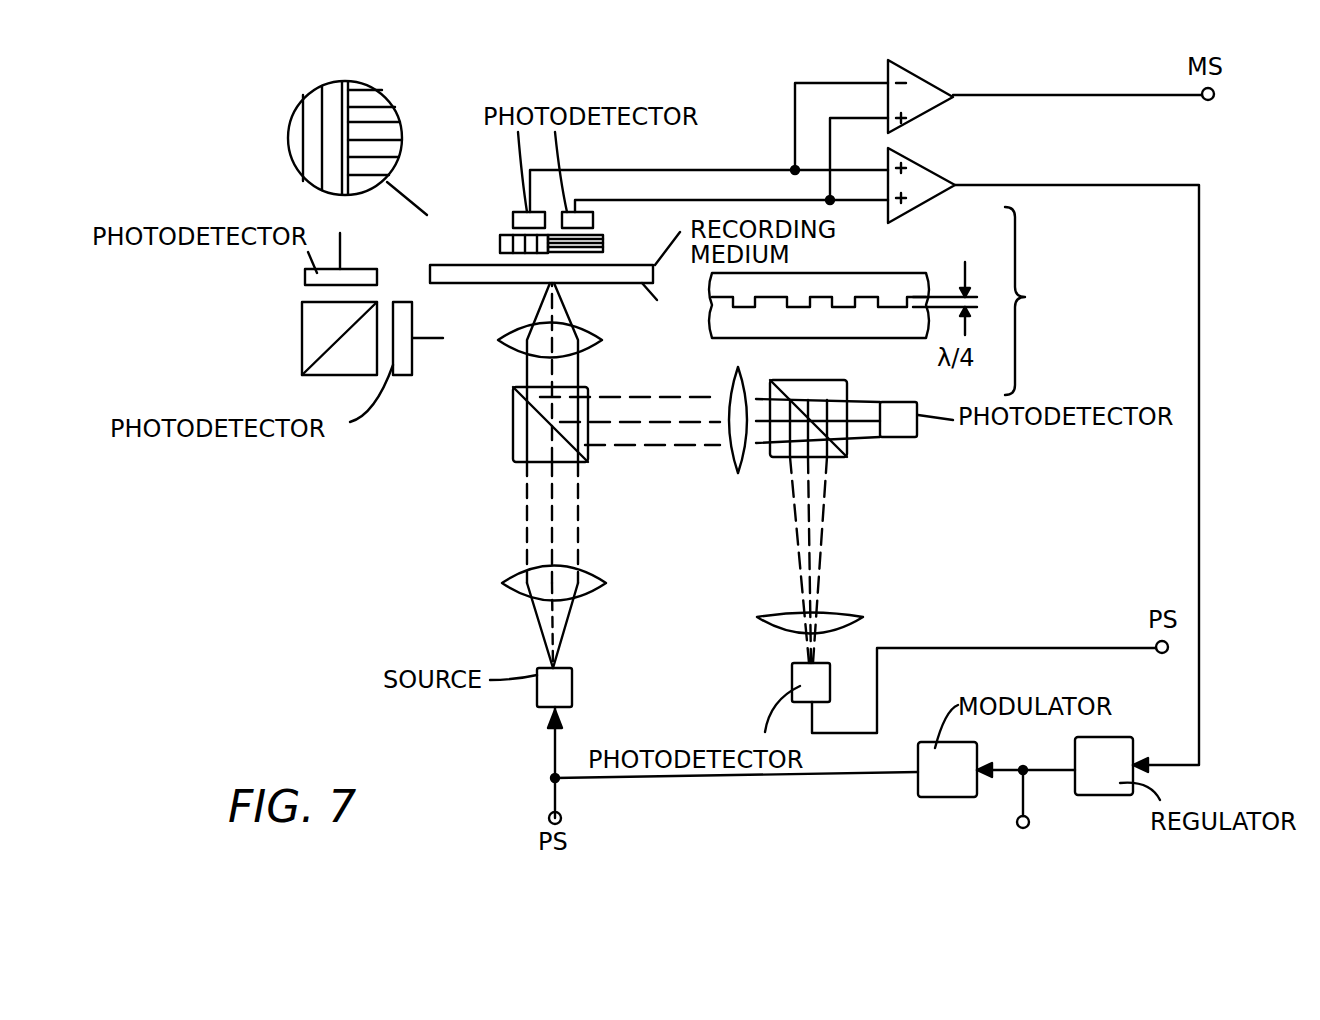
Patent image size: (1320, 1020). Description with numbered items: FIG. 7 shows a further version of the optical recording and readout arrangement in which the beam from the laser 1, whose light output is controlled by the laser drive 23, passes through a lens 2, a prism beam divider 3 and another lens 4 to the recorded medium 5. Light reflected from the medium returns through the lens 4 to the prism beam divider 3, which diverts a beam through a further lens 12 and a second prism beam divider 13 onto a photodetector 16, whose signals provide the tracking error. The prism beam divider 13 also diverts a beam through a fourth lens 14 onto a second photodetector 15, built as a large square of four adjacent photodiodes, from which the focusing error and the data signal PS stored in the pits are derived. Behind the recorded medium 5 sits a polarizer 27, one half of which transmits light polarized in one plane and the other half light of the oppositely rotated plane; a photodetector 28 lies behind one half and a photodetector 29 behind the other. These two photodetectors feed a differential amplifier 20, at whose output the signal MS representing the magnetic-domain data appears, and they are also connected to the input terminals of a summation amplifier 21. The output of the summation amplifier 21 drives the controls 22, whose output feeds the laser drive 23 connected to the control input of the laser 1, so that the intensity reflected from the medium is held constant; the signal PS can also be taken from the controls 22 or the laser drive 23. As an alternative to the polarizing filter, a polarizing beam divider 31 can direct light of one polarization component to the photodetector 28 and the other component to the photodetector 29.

The laser 1 is at (533, 705).
The lens 2 is at (503, 583).
The prism beam divider 3 is at (513, 428).
The lens 4 is at (505, 343).
The recorded medium 5 is at (712, 325).
The lens 12 is at (733, 465).
The prism beam divider 13 is at (840, 452).
The lens 14 is at (840, 612).
The photodetector 15 is at (792, 680).
The photodetector 16 is at (915, 437).
The differential amplifier 20 is at (920, 80).
The summation amplifier 21 is at (930, 170).
The controls 22 is at (1110, 795).
The laser drive 23 is at (925, 797).
The polarizer 27 is at (500, 243).
The photodetector 28 is at (513, 218).
The photodetector 29 is at (595, 218).
The polarizing beam divider 31 is at (305, 338).